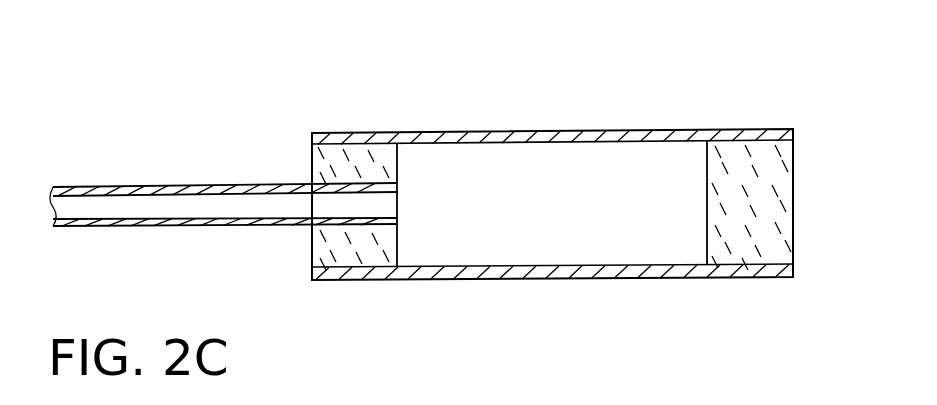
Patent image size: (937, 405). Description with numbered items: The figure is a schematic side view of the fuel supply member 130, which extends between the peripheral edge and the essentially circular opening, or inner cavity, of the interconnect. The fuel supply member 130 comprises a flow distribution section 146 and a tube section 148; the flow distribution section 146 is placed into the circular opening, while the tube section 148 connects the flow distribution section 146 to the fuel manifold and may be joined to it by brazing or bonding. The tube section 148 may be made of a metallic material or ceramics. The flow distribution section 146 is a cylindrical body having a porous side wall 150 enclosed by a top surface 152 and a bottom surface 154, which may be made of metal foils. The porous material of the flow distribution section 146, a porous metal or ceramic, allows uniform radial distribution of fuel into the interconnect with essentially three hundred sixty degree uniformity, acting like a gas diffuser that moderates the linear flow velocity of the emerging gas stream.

The fuel supply member 130 is at (185, 90).
The flow distribution section 146 is at (812, 153).
The tube section 148 is at (223, 186).
The porous side wall 150 is at (793, 212).
The top surface 152 is at (476, 130).
The bottom surface 154 is at (462, 280).